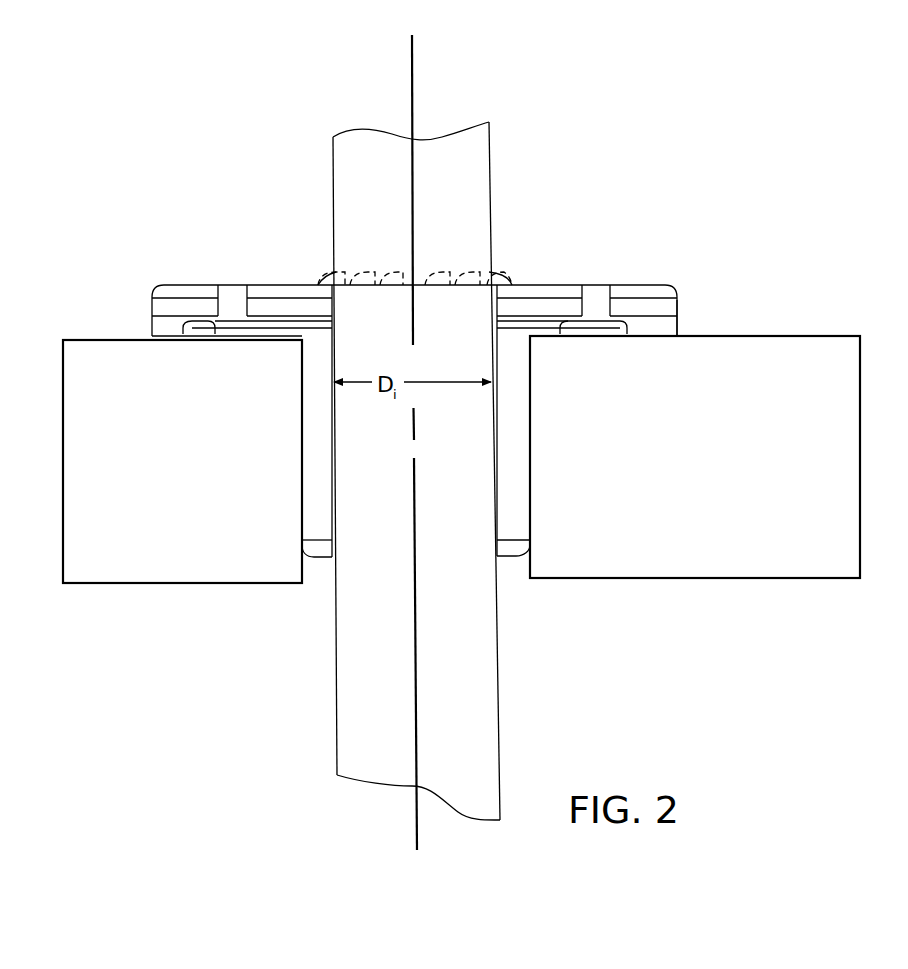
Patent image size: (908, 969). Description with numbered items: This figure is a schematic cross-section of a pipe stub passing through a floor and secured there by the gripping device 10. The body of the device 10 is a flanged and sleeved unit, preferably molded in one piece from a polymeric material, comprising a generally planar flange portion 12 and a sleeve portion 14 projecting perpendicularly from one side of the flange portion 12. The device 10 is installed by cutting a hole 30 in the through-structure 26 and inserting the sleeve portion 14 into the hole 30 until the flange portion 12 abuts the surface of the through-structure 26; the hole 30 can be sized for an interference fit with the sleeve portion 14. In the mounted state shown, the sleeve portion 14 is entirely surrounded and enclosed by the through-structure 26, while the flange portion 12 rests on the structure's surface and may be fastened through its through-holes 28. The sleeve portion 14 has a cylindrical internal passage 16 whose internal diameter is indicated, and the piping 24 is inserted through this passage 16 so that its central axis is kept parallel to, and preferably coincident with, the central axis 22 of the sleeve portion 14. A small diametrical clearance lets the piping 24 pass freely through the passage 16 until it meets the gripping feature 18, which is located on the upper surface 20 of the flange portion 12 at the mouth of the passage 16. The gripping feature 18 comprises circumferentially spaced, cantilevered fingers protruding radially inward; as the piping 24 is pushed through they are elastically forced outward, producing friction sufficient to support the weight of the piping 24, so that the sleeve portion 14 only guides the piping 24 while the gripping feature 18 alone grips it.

The gripping device 10 is at (300, 477).
The flange portion 12 is at (678, 311).
The sleeve portion 14 is at (531, 445).
The internal passage 16 is at (497, 520).
The gripping feature 18 is at (505, 268).
The upper surface 20 is at (643, 284).
The central axis 22 is at (412, 82).
The piping 24 is at (498, 660).
The through-structure 26 is at (128, 572).
The through-holes 28 is at (228, 283).
The hole 30 is at (302, 508).